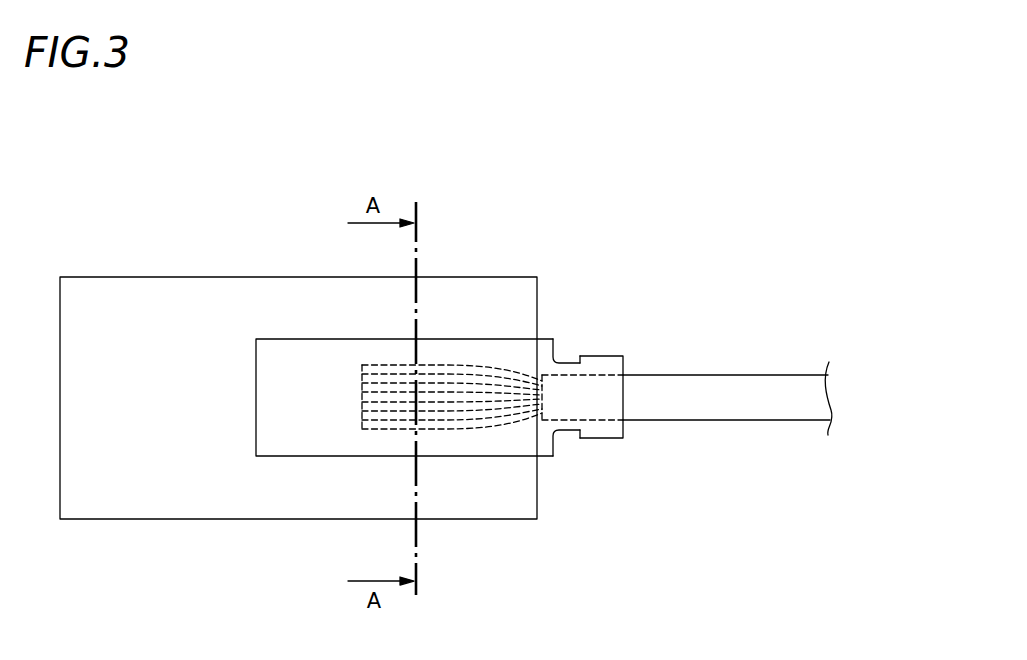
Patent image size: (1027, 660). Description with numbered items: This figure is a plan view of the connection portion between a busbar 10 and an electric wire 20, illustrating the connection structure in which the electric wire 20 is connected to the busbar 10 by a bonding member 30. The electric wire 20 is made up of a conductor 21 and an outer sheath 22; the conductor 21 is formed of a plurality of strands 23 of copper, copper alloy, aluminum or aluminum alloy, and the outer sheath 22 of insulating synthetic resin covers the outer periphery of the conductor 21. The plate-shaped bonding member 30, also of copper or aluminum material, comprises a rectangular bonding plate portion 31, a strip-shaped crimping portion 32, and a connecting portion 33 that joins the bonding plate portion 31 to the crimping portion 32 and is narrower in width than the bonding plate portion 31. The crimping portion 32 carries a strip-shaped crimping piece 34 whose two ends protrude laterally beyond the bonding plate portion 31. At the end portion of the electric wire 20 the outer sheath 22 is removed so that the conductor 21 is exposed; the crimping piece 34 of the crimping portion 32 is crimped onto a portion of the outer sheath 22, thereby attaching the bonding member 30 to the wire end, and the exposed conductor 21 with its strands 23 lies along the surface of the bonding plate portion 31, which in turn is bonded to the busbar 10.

The busbar 10 is at (190, 524).
The electric wire 20 is at (739, 371).
The conductor 21 is at (468, 433).
The outer sheath 22 is at (713, 406).
The strands 23 is at (393, 432).
The bonding member 30 is at (498, 334).
The bonding plate portion 31 is at (456, 352).
The crimping portion 32 is at (624, 364).
The connecting portion 33 is at (564, 360).
The crimping piece 34 is at (603, 356).